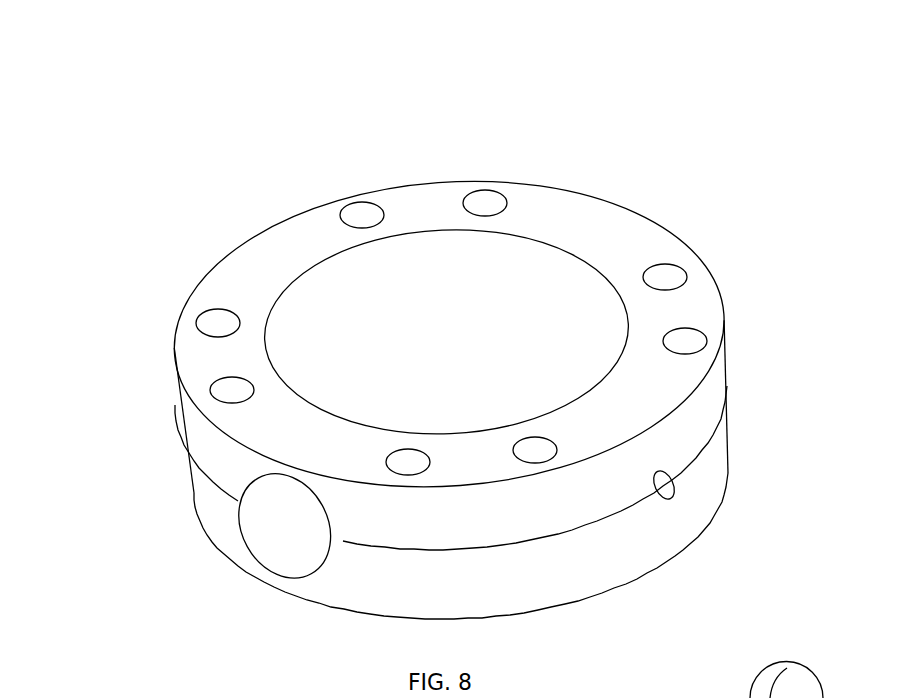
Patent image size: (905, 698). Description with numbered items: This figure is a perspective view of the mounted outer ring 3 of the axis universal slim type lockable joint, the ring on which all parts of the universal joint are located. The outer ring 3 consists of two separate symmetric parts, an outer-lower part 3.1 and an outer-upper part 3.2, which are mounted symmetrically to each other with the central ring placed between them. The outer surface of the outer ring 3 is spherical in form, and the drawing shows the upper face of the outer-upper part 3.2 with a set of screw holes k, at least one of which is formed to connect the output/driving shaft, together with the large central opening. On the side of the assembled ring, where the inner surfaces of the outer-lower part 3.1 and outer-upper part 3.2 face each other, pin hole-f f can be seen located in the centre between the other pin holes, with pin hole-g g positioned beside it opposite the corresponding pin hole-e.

The outer ring 3 is at (143, 113).
The outer-lower part 3.1 is at (650, 525).
The outer-upper part 3.2 is at (285, 248).
The screw hole k is at (670, 277).
The pin hole- f is at (280, 522).
The pin hole- g is at (674, 484).